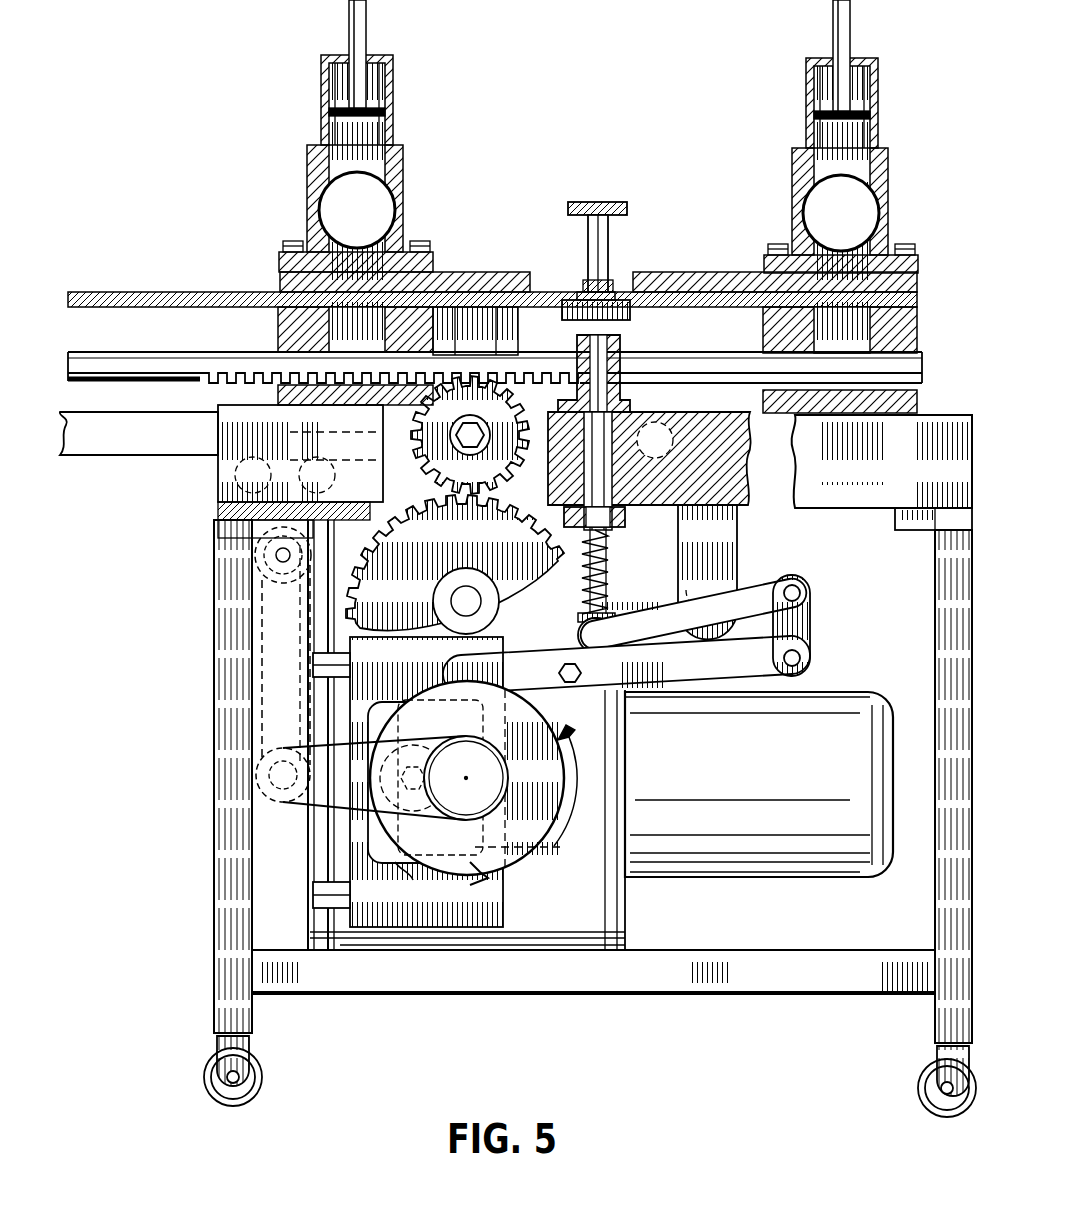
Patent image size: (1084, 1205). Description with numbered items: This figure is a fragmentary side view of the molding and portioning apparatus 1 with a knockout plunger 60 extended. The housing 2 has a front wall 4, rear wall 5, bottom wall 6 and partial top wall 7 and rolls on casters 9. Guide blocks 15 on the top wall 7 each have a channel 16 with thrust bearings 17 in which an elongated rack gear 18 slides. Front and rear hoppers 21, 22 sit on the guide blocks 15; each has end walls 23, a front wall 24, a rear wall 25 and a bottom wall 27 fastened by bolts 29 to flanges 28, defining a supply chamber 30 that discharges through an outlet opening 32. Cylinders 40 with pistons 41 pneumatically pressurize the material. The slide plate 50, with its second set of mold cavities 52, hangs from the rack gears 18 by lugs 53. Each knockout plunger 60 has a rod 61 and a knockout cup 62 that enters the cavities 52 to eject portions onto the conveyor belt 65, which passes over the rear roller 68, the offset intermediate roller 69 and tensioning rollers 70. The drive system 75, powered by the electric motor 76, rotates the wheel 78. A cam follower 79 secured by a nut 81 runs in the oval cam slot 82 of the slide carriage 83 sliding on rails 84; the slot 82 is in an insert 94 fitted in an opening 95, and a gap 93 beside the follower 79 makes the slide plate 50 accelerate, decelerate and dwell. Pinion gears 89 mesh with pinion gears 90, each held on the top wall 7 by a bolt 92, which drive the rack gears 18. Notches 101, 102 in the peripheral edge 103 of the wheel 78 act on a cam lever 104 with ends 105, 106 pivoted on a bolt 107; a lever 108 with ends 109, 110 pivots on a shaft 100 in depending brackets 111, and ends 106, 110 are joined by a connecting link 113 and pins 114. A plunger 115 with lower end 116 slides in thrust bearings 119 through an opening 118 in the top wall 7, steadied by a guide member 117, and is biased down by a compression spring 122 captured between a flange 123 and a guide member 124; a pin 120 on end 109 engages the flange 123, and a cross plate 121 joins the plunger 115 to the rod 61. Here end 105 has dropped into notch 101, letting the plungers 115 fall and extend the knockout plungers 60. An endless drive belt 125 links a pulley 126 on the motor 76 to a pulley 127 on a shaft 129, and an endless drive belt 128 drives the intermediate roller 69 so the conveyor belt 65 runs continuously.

The molding and portioning apparatus 1 is at (663, 1012).
The housing 2 is at (368, 1008).
The front wall 4 is at (225, 662).
The rear wall 5 is at (938, 810).
The bottom wall 6 is at (598, 995).
The partial top wall 7 is at (932, 413).
The casters 9 is at (262, 1065).
The guide blocks 15 is at (278, 328).
The channel 16 is at (840, 345).
The thrust bearings 17 is at (280, 342).
The rack gear 18 is at (128, 352).
The front hopper 21 is at (404, 200).
The rear hopper 22 is at (892, 198).
The end walls 23 is at (395, 142).
The front wall 24 is at (310, 172).
The rear wall 25 is at (398, 177).
The bottom wall 27 is at (500, 280).
The flanges 28 is at (278, 262).
The bolts 29 is at (288, 241).
The supply chamber 30 is at (325, 140).
The outlet opening 32 is at (405, 245).
The cylinders 40 is at (388, 60).
The piston 41 is at (360, 25).
The slide plate 50 is at (152, 292).
The second set of mold cavities 52 is at (634, 292).
The lugs 53 is at (490, 330).
The knockout plungers 60 is at (608, 243).
The rod 61 is at (625, 207).
The knockout cup 62 is at (574, 300).
The conveyor belt 65 is at (160, 457).
The rear roller 68 is at (688, 408).
The intermediate roller 69 is at (250, 548).
The tensioning rollers 70 is at (296, 462).
The drive system 75 is at (850, 600).
The electric motor 76 is at (775, 776).
The wheel 78 is at (520, 725).
The cam follower 79 is at (432, 684).
The nut 81 is at (432, 858).
The cam slot 82 is at (560, 848).
The slide carriage 83 is at (436, 915).
The rails 84 is at (310, 655).
The pinion gears 89 is at (475, 532).
The pinion gears 90 is at (477, 482).
The bolt 92 is at (476, 445).
The gap 93 is at (460, 660).
The insert 94 is at (345, 880).
The opening 95 is at (400, 860).
The shaft 100 is at (712, 605).
The first notch 101 is at (473, 660).
The second notch 102 is at (502, 880).
The peripheral edge 103 is at (605, 736).
The cam lever 104 is at (698, 688).
The first end 105 is at (485, 663).
The second end 106 is at (766, 668).
The bolt 107 is at (556, 672).
The lever 108 is at (625, 608).
The first end 109 is at (604, 616).
The second end 110 is at (765, 580).
The depending brackets 111 is at (740, 528).
The connecting link 113 is at (812, 630).
The pins 114 is at (802, 587).
The plunger 115 is at (660, 447).
The lower end 116 is at (626, 522).
The guide member 117 is at (612, 348).
The opening 118 is at (576, 470).
The thrust bearings 119 is at (618, 412).
The pin 120 is at (578, 628).
The cross plate 121 is at (602, 200).
The compression spring 122 is at (612, 562).
The flange 123 is at (583, 594).
The guide member 124 is at (626, 518).
The endless drive belt 125 is at (420, 820).
The pulley 126 is at (490, 778).
The pulley 127 is at (258, 780).
The endless drive belt 128 is at (266, 630).
The shaft 129 is at (258, 748).